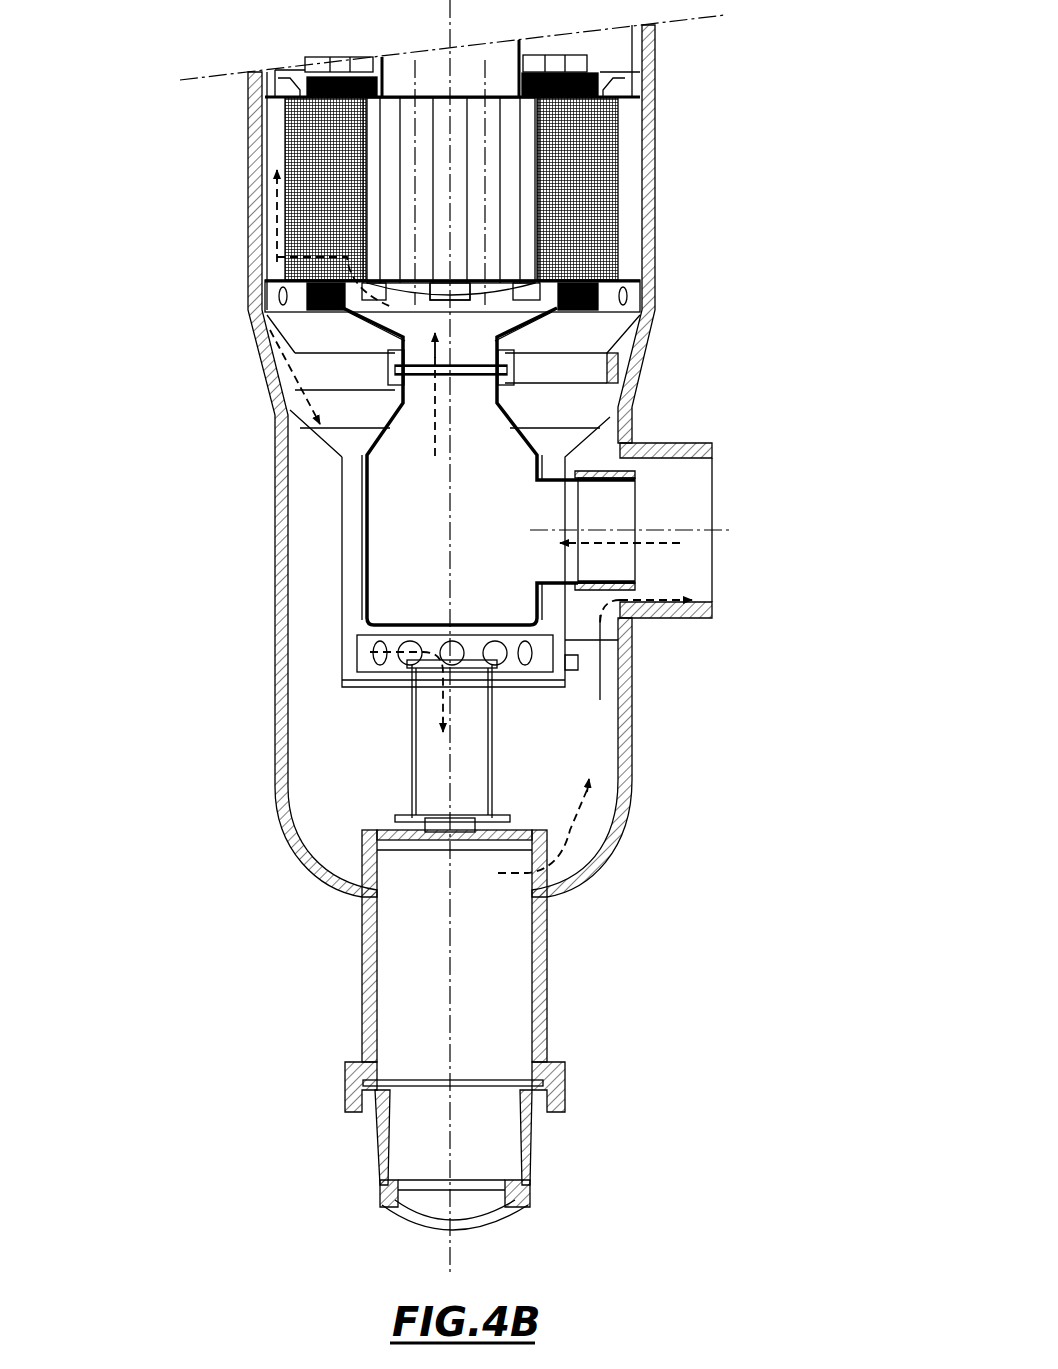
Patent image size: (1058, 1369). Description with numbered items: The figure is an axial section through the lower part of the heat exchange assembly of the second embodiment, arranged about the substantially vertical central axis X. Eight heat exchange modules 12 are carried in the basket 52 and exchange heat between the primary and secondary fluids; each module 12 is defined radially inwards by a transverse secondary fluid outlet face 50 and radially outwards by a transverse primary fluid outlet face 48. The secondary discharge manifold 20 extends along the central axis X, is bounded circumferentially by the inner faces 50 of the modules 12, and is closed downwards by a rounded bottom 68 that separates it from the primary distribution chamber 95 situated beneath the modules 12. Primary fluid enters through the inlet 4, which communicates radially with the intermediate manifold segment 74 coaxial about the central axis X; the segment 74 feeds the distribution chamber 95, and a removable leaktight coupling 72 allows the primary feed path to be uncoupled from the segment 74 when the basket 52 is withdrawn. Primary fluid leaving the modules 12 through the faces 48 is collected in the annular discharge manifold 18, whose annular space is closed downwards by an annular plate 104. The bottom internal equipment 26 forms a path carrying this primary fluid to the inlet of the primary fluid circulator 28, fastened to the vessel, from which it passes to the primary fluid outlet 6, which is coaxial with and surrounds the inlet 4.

The inlet 4 is at (608, 480).
The outlet 6 is at (680, 458).
The heat exchange module 12 is at (421, 196).
The annular manifold 18 is at (282, 235).
The central manifold 20 is at (365, 250).
The bottom internal equipment 26 is at (372, 753).
The primary fluid circulator 28 is at (515, 990).
The transverse face 48 is at (370, 173).
The transverse face 50 is at (287, 124).
The basket 52 is at (655, 162).
The rounded bottom 68 is at (480, 290).
The removable leaktight coupling 72 is at (397, 370).
The intermediate manifold segment 74 is at (370, 518).
The distribution chamber 95 is at (550, 315).
The annular plate 104 is at (635, 270).
The central axis X is at (456, 1253).